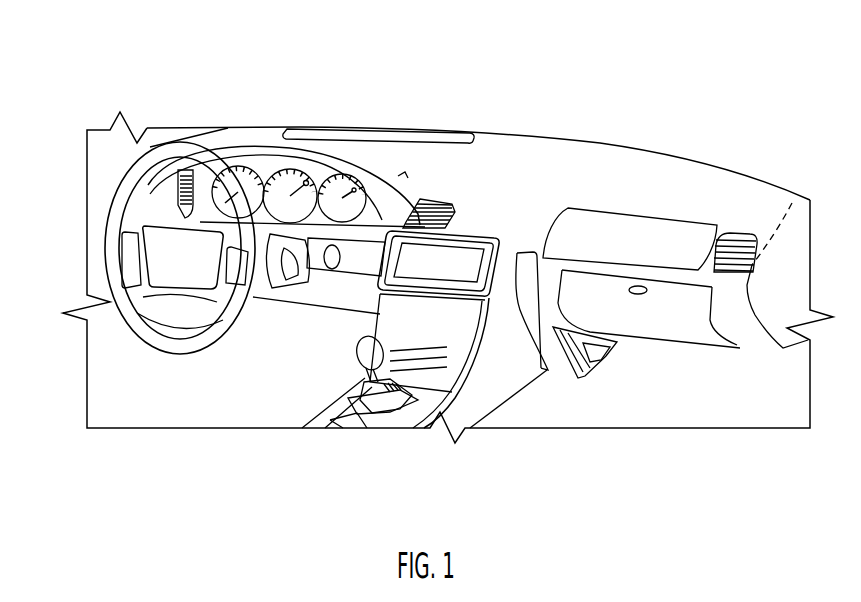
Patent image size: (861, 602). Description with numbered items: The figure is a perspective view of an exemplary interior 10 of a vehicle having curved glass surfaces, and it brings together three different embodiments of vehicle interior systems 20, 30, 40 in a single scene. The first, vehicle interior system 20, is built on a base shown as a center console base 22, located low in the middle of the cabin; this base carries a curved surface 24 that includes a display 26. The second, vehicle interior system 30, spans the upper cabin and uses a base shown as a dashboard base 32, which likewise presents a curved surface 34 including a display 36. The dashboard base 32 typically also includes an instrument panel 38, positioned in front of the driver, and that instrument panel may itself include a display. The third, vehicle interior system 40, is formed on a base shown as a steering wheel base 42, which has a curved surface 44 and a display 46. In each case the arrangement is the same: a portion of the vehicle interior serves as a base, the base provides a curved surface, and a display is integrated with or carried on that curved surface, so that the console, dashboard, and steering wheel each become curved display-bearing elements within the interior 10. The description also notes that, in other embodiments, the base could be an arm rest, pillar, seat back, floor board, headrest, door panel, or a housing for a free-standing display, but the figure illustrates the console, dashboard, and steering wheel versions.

The interior 10 is at (688, 56).
The vehicle interior system 20 is at (533, 423).
The center console base 22 is at (480, 348).
The curved surface 24 is at (390, 320).
The display 26 is at (470, 254).
The vehicle interior system 30 is at (762, 100).
The dashboard base 32 is at (548, 153).
The curved surface 34 is at (642, 176).
The display 36 is at (693, 231).
The instrument panel 38 is at (262, 165).
The vehicle interior system 40 is at (62, 150).
The steering wheel base 42 is at (182, 300).
The curved surface 44 is at (142, 222).
The display 46 is at (153, 303).